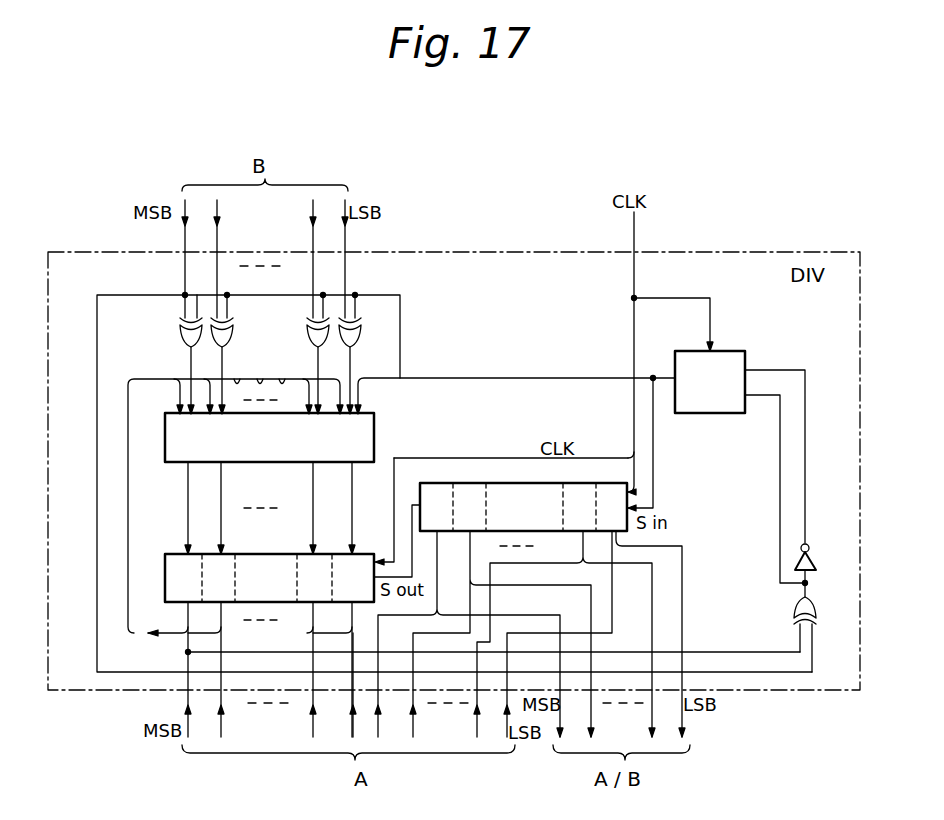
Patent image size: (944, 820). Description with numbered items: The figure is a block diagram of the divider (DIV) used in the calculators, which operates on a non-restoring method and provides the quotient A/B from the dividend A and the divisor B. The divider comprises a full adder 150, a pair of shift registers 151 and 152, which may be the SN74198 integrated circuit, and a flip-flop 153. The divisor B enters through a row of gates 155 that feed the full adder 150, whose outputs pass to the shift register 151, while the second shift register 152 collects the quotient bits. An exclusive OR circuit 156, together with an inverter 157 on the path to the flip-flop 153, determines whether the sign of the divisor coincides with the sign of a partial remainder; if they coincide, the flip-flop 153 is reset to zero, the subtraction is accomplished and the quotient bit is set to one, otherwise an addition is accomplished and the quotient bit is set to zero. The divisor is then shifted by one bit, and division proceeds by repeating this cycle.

The full adder 150 is at (376, 424).
The shift register 151 is at (173, 556).
The shift register 152 is at (495, 483).
The flip-flop 153 is at (722, 416).
The exclusive OR gates 155 is at (181, 329).
The exclusive OR circuit 156 is at (810, 613).
The inverter 157 is at (814, 557).